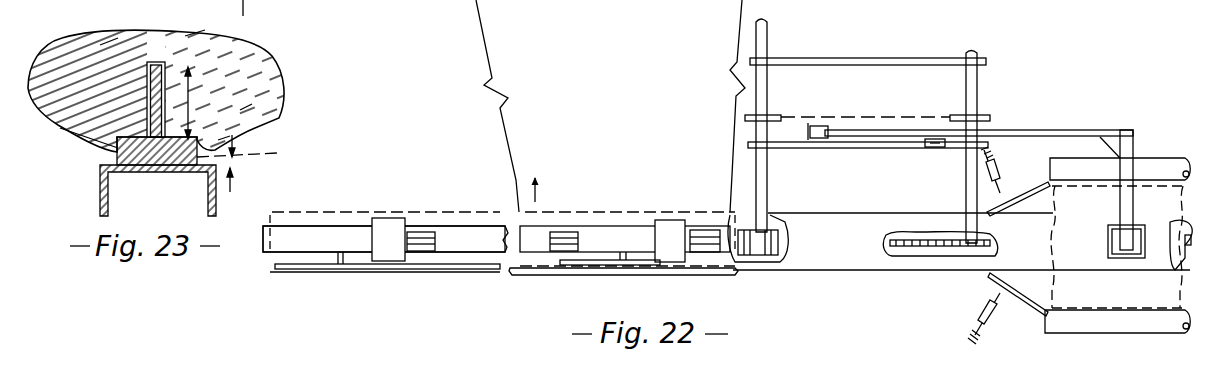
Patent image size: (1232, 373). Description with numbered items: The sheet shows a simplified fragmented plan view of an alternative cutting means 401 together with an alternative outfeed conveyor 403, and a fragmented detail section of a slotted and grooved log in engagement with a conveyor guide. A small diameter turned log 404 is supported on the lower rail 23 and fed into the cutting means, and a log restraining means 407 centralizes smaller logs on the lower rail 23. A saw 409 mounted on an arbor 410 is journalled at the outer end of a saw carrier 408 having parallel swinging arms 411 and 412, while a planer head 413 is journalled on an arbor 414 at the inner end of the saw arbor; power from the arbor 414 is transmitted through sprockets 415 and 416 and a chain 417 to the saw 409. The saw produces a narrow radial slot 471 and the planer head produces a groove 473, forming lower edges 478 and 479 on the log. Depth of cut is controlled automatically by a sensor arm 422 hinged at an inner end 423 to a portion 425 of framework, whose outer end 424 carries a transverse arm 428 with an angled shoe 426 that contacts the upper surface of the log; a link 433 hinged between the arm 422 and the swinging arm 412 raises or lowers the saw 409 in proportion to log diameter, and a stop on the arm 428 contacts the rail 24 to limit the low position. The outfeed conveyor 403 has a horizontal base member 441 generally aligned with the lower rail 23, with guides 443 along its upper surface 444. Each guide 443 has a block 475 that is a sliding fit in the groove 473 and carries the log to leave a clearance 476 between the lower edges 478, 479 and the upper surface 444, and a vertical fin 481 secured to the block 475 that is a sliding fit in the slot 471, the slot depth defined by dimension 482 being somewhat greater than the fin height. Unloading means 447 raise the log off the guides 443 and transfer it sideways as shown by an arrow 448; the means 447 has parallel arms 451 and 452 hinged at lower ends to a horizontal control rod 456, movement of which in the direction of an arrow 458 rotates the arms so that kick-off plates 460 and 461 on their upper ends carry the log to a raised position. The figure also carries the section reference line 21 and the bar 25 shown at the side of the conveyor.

In FIG. 22, the direction arrow 21 is at (292, 8).
In FIG. 22, the lower rail 23 is at (1172, 238).
In FIG. 22, the rail 24 is at (1150, 163).
In FIG. 22, the conveyor bar 25 is at (1074, 324).
In FIG. 22, the cutting means 401 is at (1148, 105).
In FIG. 22, the outfeed conveyor 403 is at (500, 285).
In FIG. 23, the small diameter turned log 404 is at (248, 64).
In FIG. 22, the log restraining means 407 is at (985, 300).
In FIG. 22, the saw carrier 408 is at (1000, 64).
In FIG. 22, the saw 409 is at (925, 236).
In FIG. 22, the arbor 410 is at (978, 78).
In FIG. 22, the swinging arm 411 is at (812, 44).
In FIG. 22, the swinging arm 412 is at (778, 150).
In FIG. 22, the planer head 413 is at (780, 247).
In FIG. 22, the arbor 414 is at (768, 76).
In FIG. 22, the sprocket 415 is at (770, 115).
In FIG. 22, the sprocket 416 is at (952, 116).
In FIG. 22, the chain 417 is at (900, 102).
In FIG. 22, the sensor arm 422 is at (1075, 106).
In FIG. 22, the inner end 423 is at (828, 128).
In FIG. 22, the outer end 424 is at (1135, 123).
In FIG. 22, the portion of framework 425 is at (810, 131).
In FIG. 22, the shoe 426 is at (1112, 252).
In FIG. 22, the transverse arm 428 is at (1120, 200).
In FIG. 22, the link 433 is at (932, 148).
In FIG. 23, the base member 441 is at (102, 194).
In FIG. 22, the base member 441 is at (340, 204).
In FIG. 23, the guide 443 is at (165, 155).
In FIG. 22, the guide 443 is at (447, 207).
In FIG. 23, the upper surface 444 is at (133, 160).
In FIG. 22, the unloading means 447 is at (470, 4).
In FIG. 22, the arrow 448 is at (538, 202).
In FIG. 22, the arm 451 is at (630, 266).
In FIG. 22, the arm 452 is at (316, 270).
In FIG. 22, the control rod 456 is at (414, 272).
In FIG. 22, the arrow 458 is at (705, 8).
In FIG. 22, the kick-off plate 460 is at (666, 222).
In FIG. 23, the kick-off plate 461 is at (252, 145).
In FIG. 22, the kick-off plate 461 is at (385, 218).
In FIG. 23, the slot 471 is at (182, 70).
In FIG. 23, the groove 473 is at (208, 128).
In FIG. 23, the block 475 is at (133, 168).
In FIG. 23, the clearance 476 is at (236, 176).
In FIG. 23, the lower edge 478 is at (114, 142).
In FIG. 23, the lower edge 479 is at (205, 145).
In FIG. 23, the vertical fin 481 is at (166, 66).
In FIG. 23, the dimension 482 is at (192, 92).